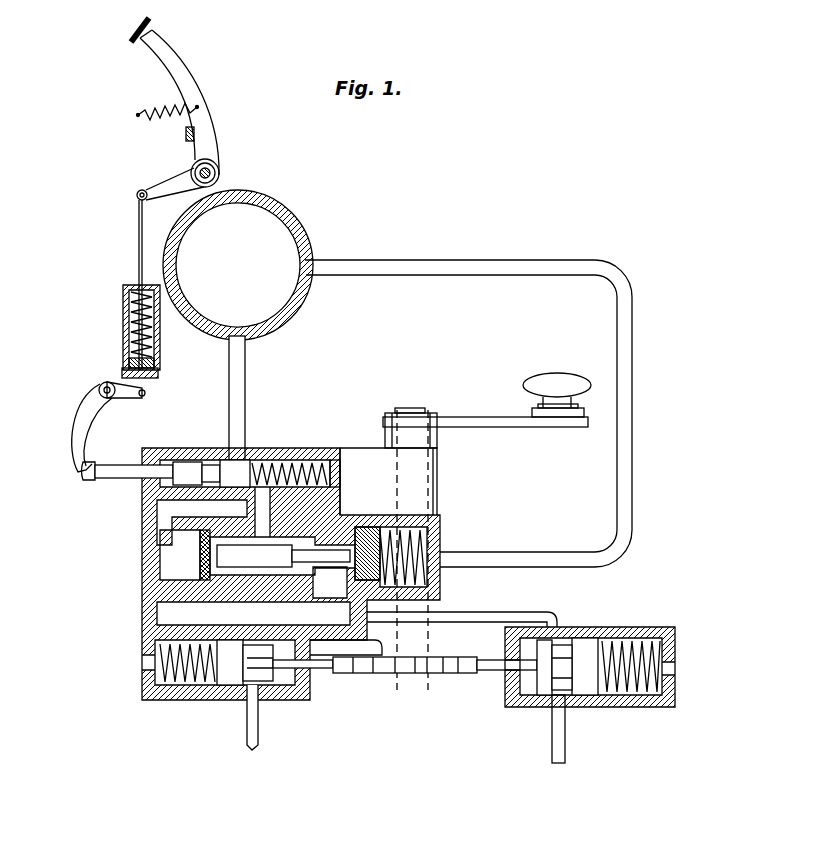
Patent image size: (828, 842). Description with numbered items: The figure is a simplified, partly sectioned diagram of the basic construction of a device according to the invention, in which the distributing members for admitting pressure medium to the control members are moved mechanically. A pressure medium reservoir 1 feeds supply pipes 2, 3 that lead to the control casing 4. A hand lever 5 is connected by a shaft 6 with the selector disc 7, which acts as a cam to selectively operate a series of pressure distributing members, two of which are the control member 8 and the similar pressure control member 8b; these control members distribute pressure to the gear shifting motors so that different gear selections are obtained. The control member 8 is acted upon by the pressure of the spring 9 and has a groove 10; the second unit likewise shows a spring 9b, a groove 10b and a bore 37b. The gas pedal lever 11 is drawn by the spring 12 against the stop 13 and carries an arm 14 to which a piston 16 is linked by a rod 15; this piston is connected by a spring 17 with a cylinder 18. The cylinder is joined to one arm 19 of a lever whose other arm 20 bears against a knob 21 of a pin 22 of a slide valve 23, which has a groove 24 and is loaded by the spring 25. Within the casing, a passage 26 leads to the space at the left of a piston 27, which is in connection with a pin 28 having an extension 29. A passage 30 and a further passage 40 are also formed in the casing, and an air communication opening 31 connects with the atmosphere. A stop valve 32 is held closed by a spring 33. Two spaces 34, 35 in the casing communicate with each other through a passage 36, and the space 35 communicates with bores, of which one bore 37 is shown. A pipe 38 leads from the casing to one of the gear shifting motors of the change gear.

The pressure medium reservoir 1 is at (290, 221).
The supply pipe 2 is at (246, 390).
The supply pipe 3 is at (430, 276).
The control casing 4 is at (150, 628).
The hand lever 5 is at (495, 420).
The shaft 6 is at (415, 479).
The selector disc 7 is at (447, 657).
The control member 8 is at (227, 672).
The spring 9 is at (178, 672).
The groove 10 is at (258, 680).
The gas pedal lever 11 is at (198, 95).
The spring 12 is at (153, 110).
The stop 13 is at (185, 134).
The arm 14 is at (173, 185).
The rod 15 is at (138, 244).
The piston 16 is at (127, 366).
The spring 17 is at (128, 322).
The cylinder 18 is at (125, 295).
The lever arm 19 is at (137, 397).
The lever arm 20 is at (84, 423).
The knob 21 is at (94, 470).
The pin 22 is at (152, 478).
The slide valve 23 is at (186, 462).
The groove 24 is at (213, 465).
The spring 25 is at (300, 462).
The passage 26 is at (165, 512).
The piston 27 is at (230, 558).
The pin 28 is at (175, 555).
The extension 29 is at (333, 560).
The passage 30 is at (341, 520).
The air communication opening 31 is at (334, 462).
The stop valve 32 is at (370, 535).
The spring 33 is at (418, 540).
The space 34 is at (345, 570).
The space 35 is at (180, 612).
The passage 36 is at (346, 616).
The bore 37 is at (257, 638).
The pipe 38 is at (253, 747).
The passage 40 is at (264, 540).
The pipe 37b is at (560, 628).
The pressure control member 8b is at (586, 645).
The spring 9b is at (636, 690).
The valve 10b is at (556, 692).